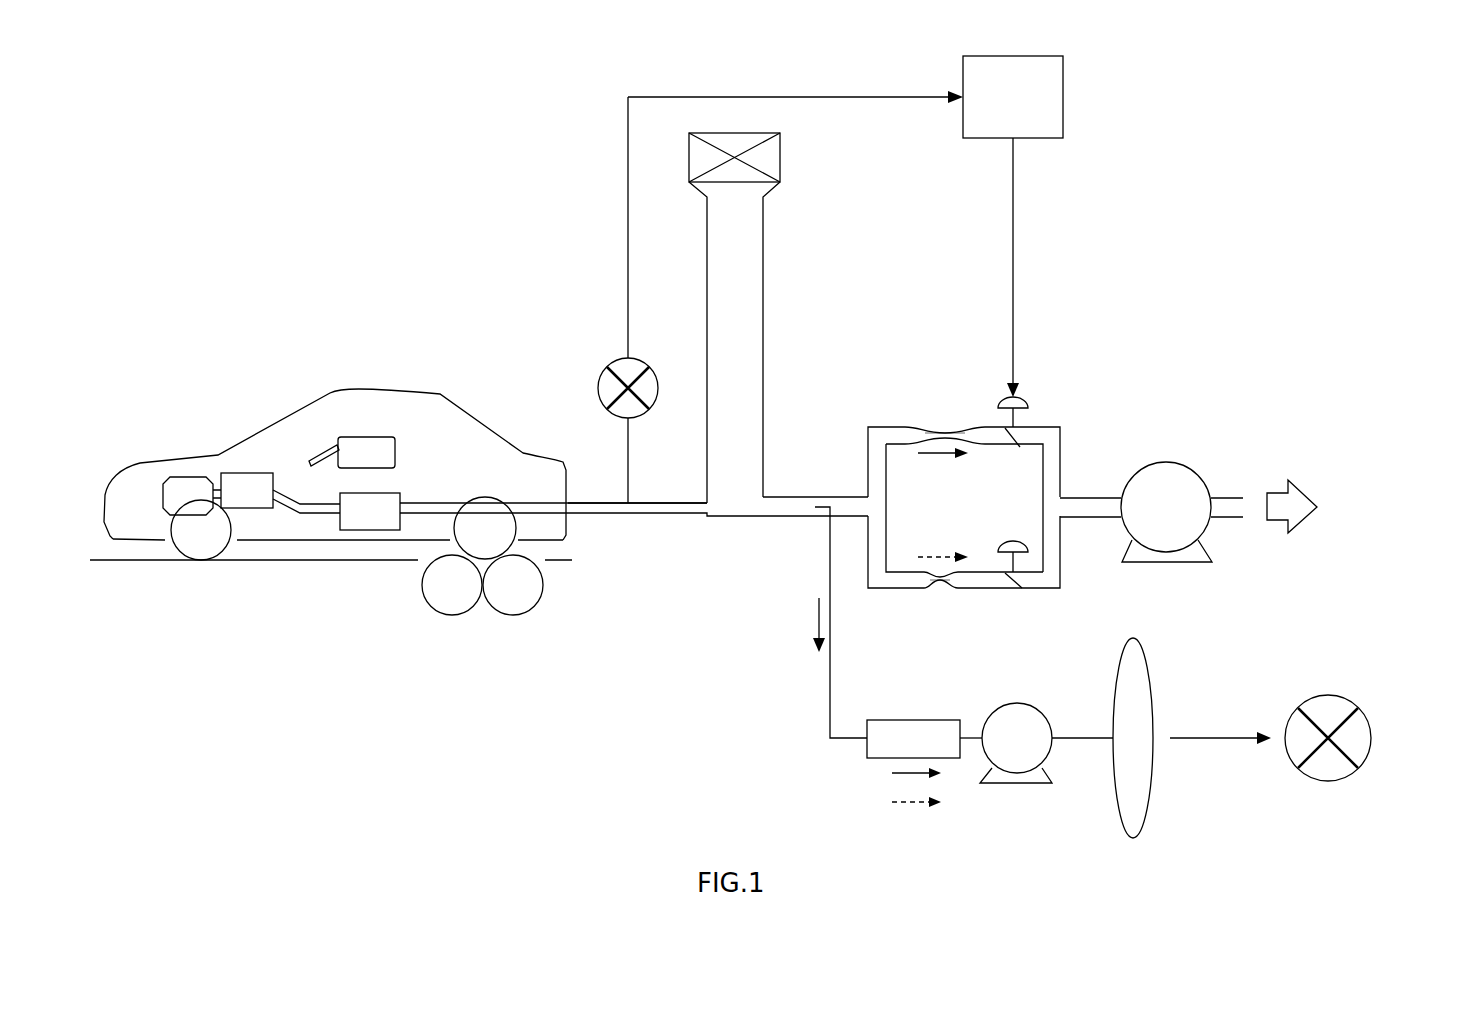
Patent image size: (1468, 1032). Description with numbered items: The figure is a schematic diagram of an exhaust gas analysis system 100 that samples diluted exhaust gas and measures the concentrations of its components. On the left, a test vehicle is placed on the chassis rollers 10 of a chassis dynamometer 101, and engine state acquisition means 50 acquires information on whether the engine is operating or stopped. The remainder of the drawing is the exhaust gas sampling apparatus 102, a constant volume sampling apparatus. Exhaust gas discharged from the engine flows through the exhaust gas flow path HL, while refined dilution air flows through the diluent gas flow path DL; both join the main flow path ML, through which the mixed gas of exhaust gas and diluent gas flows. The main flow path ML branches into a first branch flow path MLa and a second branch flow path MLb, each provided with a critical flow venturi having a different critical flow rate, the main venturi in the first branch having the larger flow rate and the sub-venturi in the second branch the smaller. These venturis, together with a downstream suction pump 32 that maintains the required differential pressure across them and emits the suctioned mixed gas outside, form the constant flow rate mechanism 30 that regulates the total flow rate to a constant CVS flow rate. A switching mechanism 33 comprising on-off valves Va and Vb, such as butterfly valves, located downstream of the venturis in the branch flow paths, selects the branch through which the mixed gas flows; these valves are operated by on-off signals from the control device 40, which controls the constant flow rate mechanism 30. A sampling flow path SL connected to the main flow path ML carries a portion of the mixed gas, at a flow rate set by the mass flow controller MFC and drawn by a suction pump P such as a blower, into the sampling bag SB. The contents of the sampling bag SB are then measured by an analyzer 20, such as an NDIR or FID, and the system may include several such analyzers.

The exhaust gas analysis system 100 is at (306, 215).
The chassis dynamometer 101 is at (327, 650).
The chassis rollers 10 is at (437, 613).
The exhaust gas sampling apparatus 102 is at (692, 665).
The engine state acquisition means 50 is at (597, 388).
The control device 40 is at (1065, 98).
The constant flow rate mechanism 30 is at (1110, 345).
The suction pump 32 is at (1167, 460).
The switching mechanism 33 is at (983, 465).
The analyzer 20 is at (1373, 740).
The exhaust gas flow path HL is at (684, 502).
The main flow path ML is at (788, 505).
The first branch flow path MLa is at (896, 434).
The second branch flow path MLb is at (896, 579).
The diluent gas flow path DL is at (738, 288).
The sampling flow path SL is at (827, 700).
The mass flow controller MFC is at (911, 767).
The suction pump P is at (1017, 703).
The sampling bag SB is at (1145, 827).
The on-off valve Va is at (1007, 430).
The on-off valve Vb is at (995, 577).